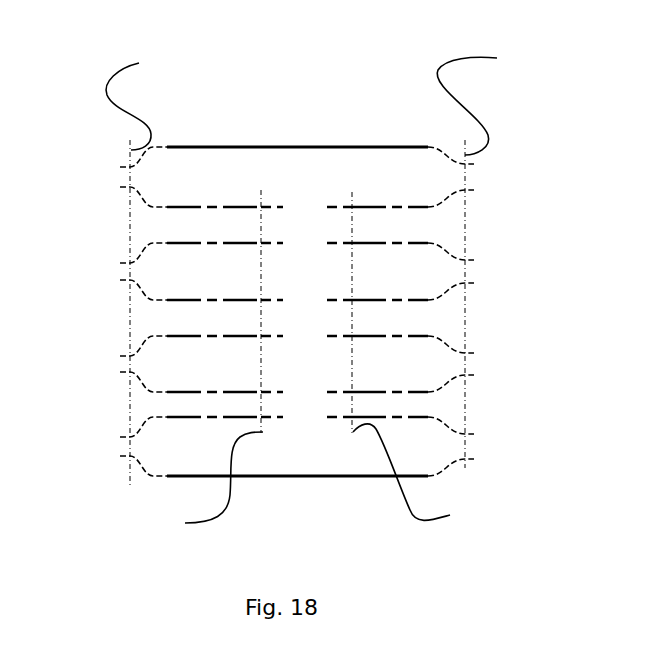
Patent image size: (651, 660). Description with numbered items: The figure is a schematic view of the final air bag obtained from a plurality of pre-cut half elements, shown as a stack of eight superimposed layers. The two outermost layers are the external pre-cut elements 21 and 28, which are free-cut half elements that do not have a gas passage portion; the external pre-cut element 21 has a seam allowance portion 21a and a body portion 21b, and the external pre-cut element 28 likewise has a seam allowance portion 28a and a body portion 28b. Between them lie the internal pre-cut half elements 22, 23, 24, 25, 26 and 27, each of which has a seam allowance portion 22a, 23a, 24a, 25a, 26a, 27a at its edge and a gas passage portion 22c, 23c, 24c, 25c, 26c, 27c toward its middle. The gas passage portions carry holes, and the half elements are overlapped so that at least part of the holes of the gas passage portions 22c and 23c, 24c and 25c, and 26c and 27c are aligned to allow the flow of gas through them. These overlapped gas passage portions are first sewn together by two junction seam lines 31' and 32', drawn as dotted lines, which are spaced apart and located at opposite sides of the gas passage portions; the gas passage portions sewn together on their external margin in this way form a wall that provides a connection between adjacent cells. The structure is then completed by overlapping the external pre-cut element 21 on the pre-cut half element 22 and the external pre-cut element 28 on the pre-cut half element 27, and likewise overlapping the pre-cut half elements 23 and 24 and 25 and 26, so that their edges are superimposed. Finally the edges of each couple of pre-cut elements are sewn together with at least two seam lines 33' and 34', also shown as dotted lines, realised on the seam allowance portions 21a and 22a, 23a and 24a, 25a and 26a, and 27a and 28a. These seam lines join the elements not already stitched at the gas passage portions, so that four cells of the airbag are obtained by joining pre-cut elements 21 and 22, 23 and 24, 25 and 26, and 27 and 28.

The external pre-cut element 21 is at (485, 149).
The pre-cut half element 22 is at (355, 192).
The pre-cut half element 23 is at (355, 246).
The pre-cut half element 24 is at (355, 289).
The pre-cut half element 25 is at (355, 339).
The pre-cut half element 26 is at (355, 381).
The pre-cut half element 27 is at (355, 421).
The external pre-cut element 28 is at (485, 463).
The seam allowance portion 21a is at (121, 151).
The seam allowance portion 22a is at (121, 201).
The seam allowance portion 23a is at (121, 248).
The seam allowance portion 24a is at (121, 294).
The seam allowance portion 25a is at (121, 342).
The seam allowance portion 26a is at (121, 386).
The seam allowance portion 27a is at (121, 421).
The seam allowance portion 28a is at (121, 462).
The body portion 21b is at (297, 127).
The body portion 28b is at (297, 495).
The gas passage portion 22c is at (306, 188).
The gas passage portion 23c is at (306, 258).
The gas passage portion 24c is at (306, 287).
The gas passage portion 25c is at (306, 350).
The gas passage portion 26c is at (306, 379).
The gas passage portion 27c is at (306, 436).
The junction seam line 31' is at (423, 474).
The junction seam line 32' is at (203, 481).
The seam line 33' is at (492, 101).
The seam line 34' is at (146, 89).